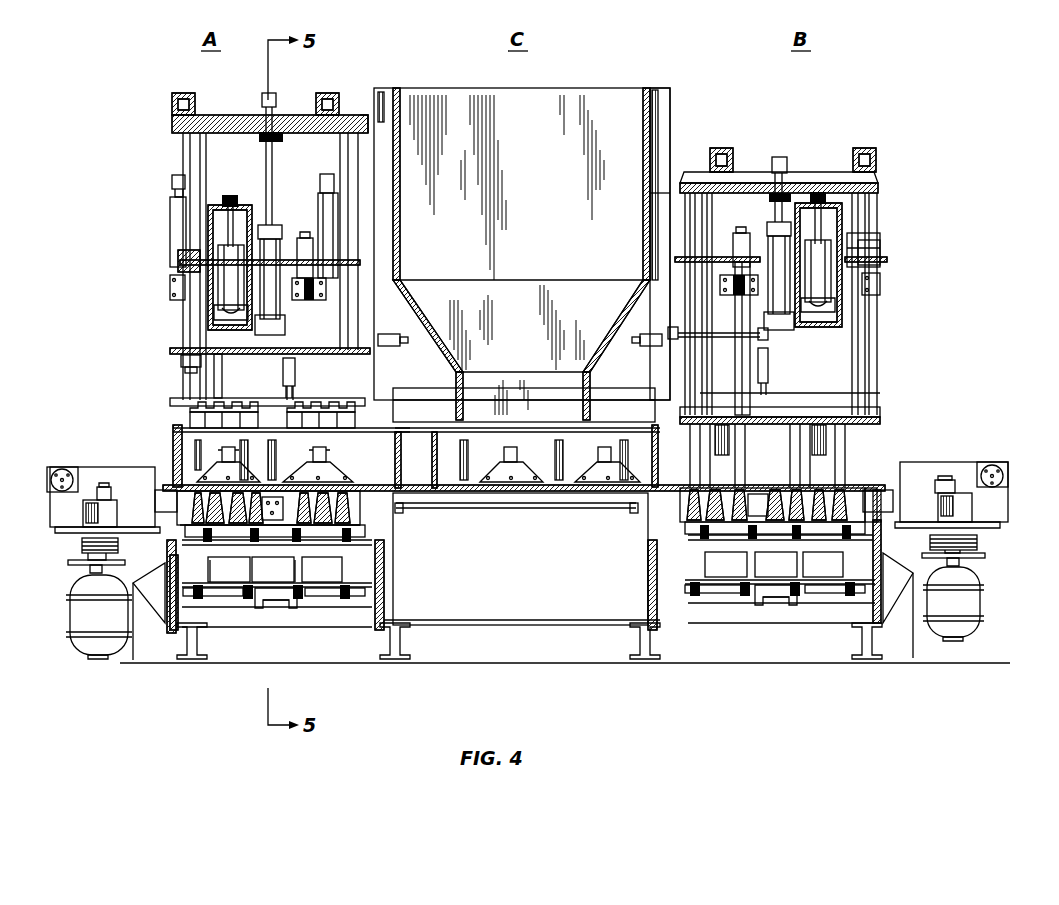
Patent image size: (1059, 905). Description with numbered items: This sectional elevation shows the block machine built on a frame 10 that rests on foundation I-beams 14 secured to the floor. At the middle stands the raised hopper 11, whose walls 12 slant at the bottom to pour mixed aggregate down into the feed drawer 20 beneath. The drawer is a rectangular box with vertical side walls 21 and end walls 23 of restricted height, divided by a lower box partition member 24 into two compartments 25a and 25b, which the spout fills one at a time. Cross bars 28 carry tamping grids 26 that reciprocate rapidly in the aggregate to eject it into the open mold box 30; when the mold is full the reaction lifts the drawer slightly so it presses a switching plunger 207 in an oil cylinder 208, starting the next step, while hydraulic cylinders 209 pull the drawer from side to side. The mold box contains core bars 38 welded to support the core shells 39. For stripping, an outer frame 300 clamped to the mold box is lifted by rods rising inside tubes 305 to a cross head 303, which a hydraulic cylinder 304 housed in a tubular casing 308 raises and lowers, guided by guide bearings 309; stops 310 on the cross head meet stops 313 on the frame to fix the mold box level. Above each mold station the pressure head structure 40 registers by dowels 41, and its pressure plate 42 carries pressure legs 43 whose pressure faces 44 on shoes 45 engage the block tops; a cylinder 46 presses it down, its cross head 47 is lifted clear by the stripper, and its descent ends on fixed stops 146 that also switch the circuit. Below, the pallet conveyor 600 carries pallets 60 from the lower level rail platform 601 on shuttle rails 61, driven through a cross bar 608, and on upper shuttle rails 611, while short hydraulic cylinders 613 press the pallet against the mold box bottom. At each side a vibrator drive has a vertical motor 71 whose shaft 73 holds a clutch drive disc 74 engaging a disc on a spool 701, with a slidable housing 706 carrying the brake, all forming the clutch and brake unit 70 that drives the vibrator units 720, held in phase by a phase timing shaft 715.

The frame 10 is at (175, 290).
The hopper 11 is at (602, 88).
The walls 12 is at (398, 210).
The I-beams 14 is at (182, 660).
The feed drawer 20 is at (180, 402).
The side walls 21 is at (628, 417).
The end walls 23 is at (175, 480).
The box partition member 24 is at (436, 458).
The compartment 25a is at (285, 449).
The compartment 25b is at (572, 449).
The tamping grids 26 is at (210, 468).
The cross bars 28 is at (222, 452).
The mold box 30 is at (398, 533).
The core bars 38 is at (362, 488).
The core shells 39 is at (375, 520).
The pressure head structure 40 is at (767, 456).
The dowels 41 is at (216, 378).
The pressure plate 42 is at (175, 350).
The pressure legs 43 is at (195, 413).
The pressure faces 44 is at (848, 483).
The shoes 45 is at (190, 425).
The cylinder 46 is at (272, 232).
The cross head 47 is at (215, 118).
The pallet 60 is at (373, 550).
The shuttle rails 61 is at (205, 605).
The clutch and brake unit 70 is at (85, 514).
The motor 71 is at (70, 610).
The shaft 73 is at (90, 570).
The clutch drive disc 74 is at (68, 562).
The fixed stops 146 is at (172, 179).
The switching plunger 207 is at (284, 392).
The oil cylinder 208 is at (283, 372).
The hydraulic cylinders 209 is at (880, 393).
The outer frame 300 is at (167, 518).
The cross head 303 is at (372, 262).
The hydraulic cylinder 304 is at (222, 255).
The tubes 305 is at (185, 361).
The tubular casing 308 is at (245, 205).
The guide bearings 309 is at (172, 283).
The stops 310 is at (303, 240).
The stops 313 is at (735, 296).
The pallet conveyor 600 is at (385, 598).
The lower level rail platform 601 is at (245, 605).
The cross bar 608 is at (278, 610).
The shuttle rails 611 is at (795, 540).
The short hydraulic cylinders 613 is at (860, 567).
The spool 701 is at (82, 545).
The slidable housing 706 is at (1010, 514).
The phase timing shaft 715 is at (55, 478).
The vibrator units 720 is at (150, 484).